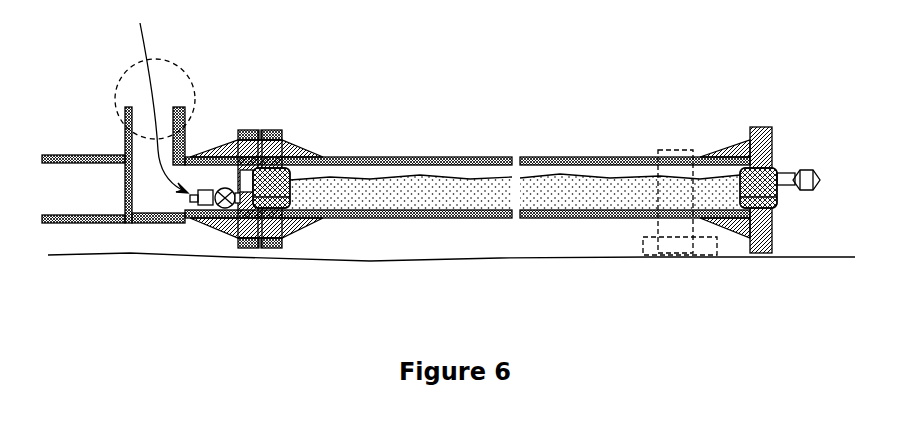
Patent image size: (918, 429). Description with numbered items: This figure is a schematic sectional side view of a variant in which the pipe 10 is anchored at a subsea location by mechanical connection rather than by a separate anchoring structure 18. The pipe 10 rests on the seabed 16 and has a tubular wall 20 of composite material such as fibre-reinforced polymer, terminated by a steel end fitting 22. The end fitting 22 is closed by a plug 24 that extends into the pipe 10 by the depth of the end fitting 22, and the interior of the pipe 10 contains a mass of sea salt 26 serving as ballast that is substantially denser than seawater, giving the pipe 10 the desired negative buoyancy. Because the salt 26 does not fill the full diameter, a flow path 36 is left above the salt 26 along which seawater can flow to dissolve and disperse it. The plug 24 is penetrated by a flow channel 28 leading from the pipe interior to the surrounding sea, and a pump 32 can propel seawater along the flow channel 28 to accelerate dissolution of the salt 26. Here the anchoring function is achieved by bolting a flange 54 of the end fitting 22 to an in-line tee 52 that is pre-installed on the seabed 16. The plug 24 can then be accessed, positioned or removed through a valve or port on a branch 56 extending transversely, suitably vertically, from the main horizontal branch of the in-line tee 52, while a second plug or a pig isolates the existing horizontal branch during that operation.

The pipe 10 is at (390, 102).
The seabed 16 is at (100, 253).
The anchoring structure 18 is at (693, 260).
The tubular wall 20 is at (442, 162).
The end fitting 22 is at (290, 212).
The plug 24 is at (780, 200).
The sea salt 26 is at (578, 190).
The flow channel 28 is at (748, 158).
The pump 32 is at (227, 210).
The flow path 36 is at (496, 175).
The in-line tee 52 is at (91, 154).
The flange 54 is at (248, 128).
The branch 56 is at (130, 65).